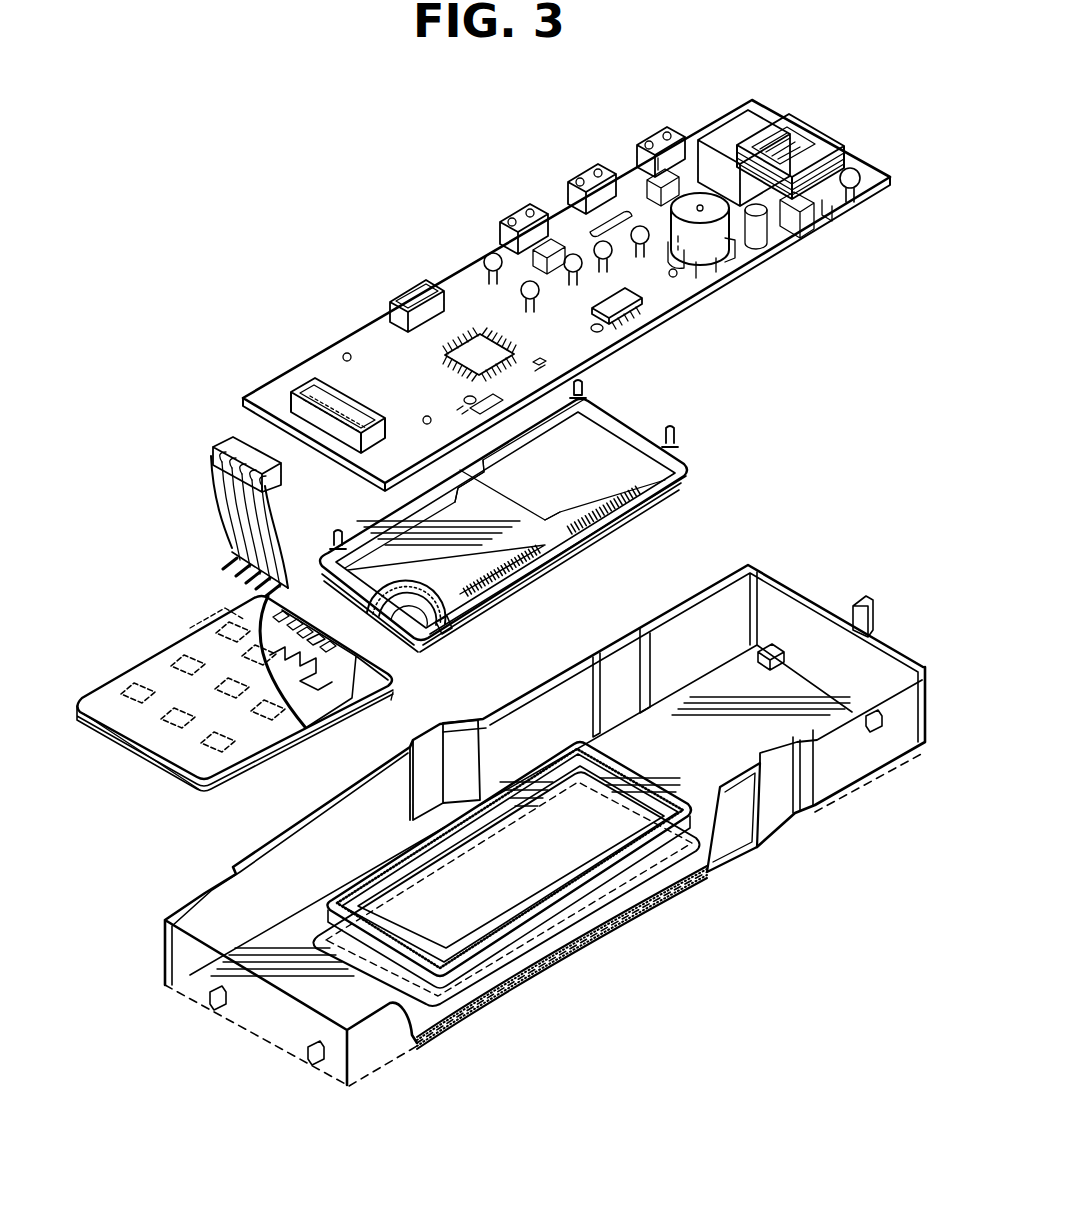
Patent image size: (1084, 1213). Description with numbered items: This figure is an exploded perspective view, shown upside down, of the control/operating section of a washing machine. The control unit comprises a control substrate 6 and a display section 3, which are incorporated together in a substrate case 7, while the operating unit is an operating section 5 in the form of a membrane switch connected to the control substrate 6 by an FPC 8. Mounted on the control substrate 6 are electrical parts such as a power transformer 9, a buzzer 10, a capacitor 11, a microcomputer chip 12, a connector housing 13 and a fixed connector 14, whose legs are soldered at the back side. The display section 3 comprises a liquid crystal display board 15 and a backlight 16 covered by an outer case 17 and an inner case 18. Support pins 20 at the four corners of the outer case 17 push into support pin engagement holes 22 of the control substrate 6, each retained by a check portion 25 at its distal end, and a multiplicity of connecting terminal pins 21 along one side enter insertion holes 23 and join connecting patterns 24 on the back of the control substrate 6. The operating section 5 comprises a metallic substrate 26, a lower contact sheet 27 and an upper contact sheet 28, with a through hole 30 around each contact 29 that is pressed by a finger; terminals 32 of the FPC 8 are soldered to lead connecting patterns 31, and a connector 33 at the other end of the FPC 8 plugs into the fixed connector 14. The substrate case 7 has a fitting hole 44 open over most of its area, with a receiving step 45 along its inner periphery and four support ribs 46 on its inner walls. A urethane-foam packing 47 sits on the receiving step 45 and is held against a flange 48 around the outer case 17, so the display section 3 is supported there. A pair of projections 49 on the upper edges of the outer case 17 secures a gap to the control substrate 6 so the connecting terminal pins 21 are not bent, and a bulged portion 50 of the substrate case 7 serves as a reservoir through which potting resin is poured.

The display section 3 is at (634, 426).
The operating section 5 is at (172, 776).
The control substrate 6 is at (372, 324).
The substrate case 7 is at (834, 610).
The FPC (Flexible Pattern Cable) 8 is at (211, 482).
The power transformer 9 is at (800, 134).
The buzzer 10 is at (740, 254).
The capacitor 11 is at (490, 255).
The microcomputer chip 12 is at (480, 332).
The connector housing 13 is at (646, 140).
The fixed connector 14 is at (295, 376).
The liquid crystal display board 15 is at (385, 612).
The backlight 16 is at (411, 632).
The outer case 17 is at (433, 633).
The inner case 18 is at (452, 628).
The support pins 20 is at (680, 450).
The connecting terminal pins 21 is at (628, 512).
The support pin engagement holes 22 is at (344, 353).
The insertion holes 23 is at (613, 324).
The connecting patterns 24 is at (591, 328).
The check portion 25 is at (672, 438).
The metallic substrate 26 is at (300, 726).
The lower contact sheet 27 is at (344, 690).
The upper contact sheet 28 is at (260, 738).
The contact 29 is at (228, 626).
The through hole 30 is at (200, 628).
The lead connecting patterns 31 is at (298, 632).
The terminals 32 is at (226, 566).
The connector 33 is at (220, 441).
The fitting hole 44 is at (628, 894).
The receiving step 45 is at (708, 878).
The support ribs 46 is at (772, 662).
The packing 47 is at (656, 774).
The flange 48 is at (684, 480).
The projections 49 is at (466, 470).
The bulged portion 50 is at (425, 745).